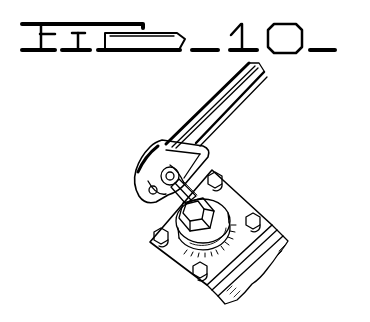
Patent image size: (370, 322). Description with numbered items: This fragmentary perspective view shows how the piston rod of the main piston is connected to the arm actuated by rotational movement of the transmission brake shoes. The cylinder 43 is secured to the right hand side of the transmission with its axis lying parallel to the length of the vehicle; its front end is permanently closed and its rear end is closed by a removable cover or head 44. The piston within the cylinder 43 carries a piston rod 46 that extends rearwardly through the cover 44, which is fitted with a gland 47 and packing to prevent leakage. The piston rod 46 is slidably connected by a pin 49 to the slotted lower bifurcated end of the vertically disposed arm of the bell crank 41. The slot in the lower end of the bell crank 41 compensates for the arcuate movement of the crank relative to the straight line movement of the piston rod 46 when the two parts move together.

The bell crank 41 is at (233, 107).
The pin 49 is at (149, 190).
The piston rod 46 is at (172, 207).
The removable cover or head 44 is at (236, 200).
The gland 47 is at (224, 191).
The cylinder 43 is at (282, 251).